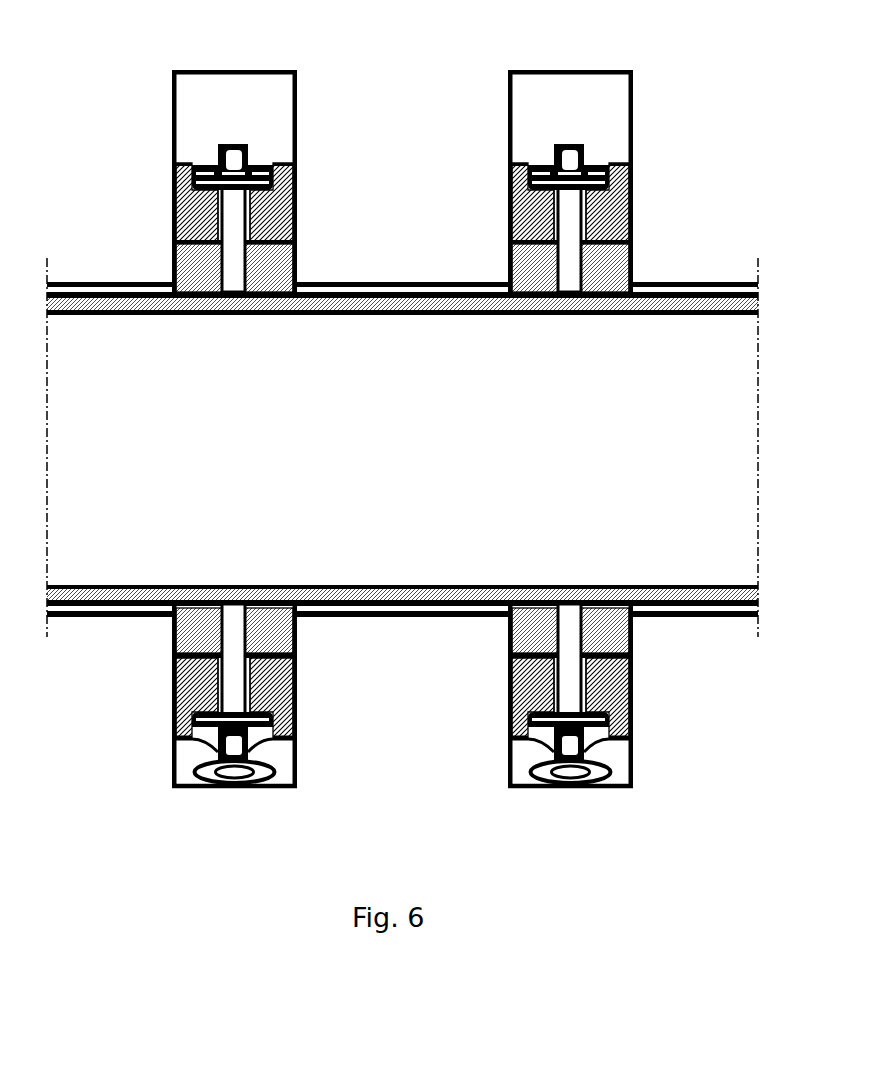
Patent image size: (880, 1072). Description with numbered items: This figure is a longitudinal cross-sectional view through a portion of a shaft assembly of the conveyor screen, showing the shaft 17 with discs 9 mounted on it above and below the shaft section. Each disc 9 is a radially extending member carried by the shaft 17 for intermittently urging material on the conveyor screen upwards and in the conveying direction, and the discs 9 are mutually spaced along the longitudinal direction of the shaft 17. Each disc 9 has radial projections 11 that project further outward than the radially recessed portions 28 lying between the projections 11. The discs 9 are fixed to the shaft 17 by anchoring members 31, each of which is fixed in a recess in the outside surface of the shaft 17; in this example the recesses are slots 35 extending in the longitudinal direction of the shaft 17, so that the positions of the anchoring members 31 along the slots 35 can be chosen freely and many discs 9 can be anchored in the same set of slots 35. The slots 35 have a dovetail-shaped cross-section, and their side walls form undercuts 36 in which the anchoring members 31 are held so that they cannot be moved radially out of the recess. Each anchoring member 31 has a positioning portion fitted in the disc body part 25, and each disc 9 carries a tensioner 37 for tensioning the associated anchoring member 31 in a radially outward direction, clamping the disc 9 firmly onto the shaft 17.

The disc 9 is at (434, 432).
The radial projection 11 is at (197, 70).
The shaft 17 is at (436, 282).
The disc body part 25 is at (297, 108).
The radially recessed portion 28 is at (185, 163).
The anchoring member 31 is at (268, 263).
The slot 35 is at (85, 294).
The undercut 36 is at (133, 294).
The tensioner 37 is at (233, 207).